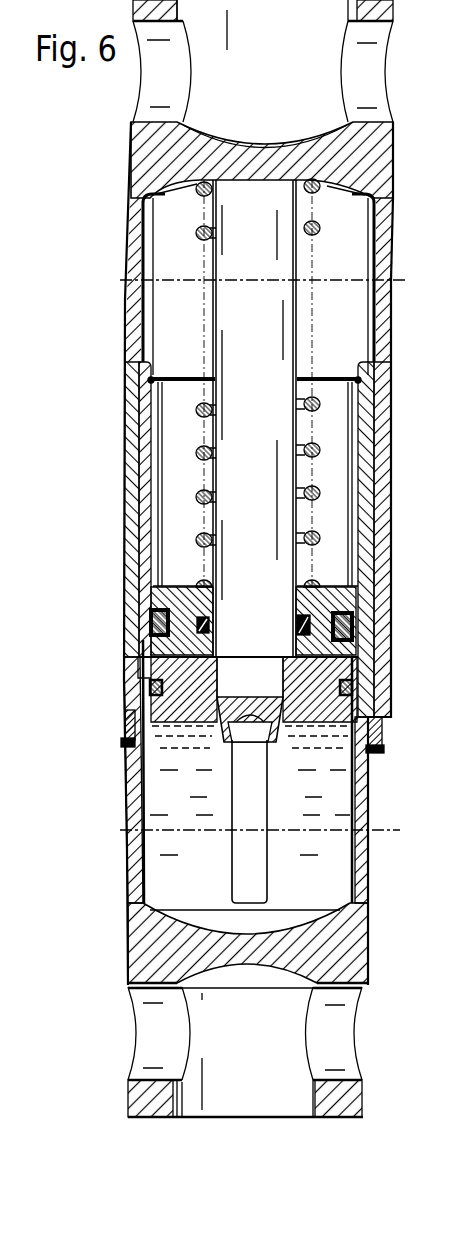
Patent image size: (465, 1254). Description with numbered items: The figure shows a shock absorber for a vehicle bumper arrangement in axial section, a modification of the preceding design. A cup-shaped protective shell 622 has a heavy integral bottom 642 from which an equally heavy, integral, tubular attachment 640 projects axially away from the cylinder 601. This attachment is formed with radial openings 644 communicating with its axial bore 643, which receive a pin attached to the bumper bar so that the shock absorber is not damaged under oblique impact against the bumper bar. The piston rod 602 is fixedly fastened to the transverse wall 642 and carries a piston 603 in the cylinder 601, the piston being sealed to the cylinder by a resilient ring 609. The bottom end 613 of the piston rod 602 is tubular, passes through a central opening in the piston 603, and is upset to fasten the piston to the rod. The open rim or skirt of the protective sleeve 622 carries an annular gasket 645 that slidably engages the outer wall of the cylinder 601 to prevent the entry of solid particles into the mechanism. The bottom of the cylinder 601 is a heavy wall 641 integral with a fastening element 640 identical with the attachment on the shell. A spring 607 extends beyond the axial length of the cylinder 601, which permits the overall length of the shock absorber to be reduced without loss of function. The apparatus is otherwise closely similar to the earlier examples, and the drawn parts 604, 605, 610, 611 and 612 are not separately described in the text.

The cylinder 601 is at (368, 860).
The piston rod 602 is at (291, 258).
The piston 603 is at (150, 680).
The valve rod 604 is at (148, 798).
The seal carrier bushing 605 is at (343, 603).
The spring 607 is at (320, 428).
The resilient ring 609 is at (360, 688).
The sealing ring 610 is at (149, 624).
The sealing ring 611 is at (296, 630).
The inner guide tube 612 is at (163, 372).
The bottom end of the piston rod 613 is at (273, 738).
The cup-shaped protective shell 622 is at (379, 322).
The tubular attachment 640 is at (428, 51).
The heavy wall 641 is at (347, 935).
The integral bottom 642 is at (370, 166).
The axial bore 643 is at (327, 74).
The radial openings 644 is at (176, 80).
The annular gasket 645 is at (125, 750).